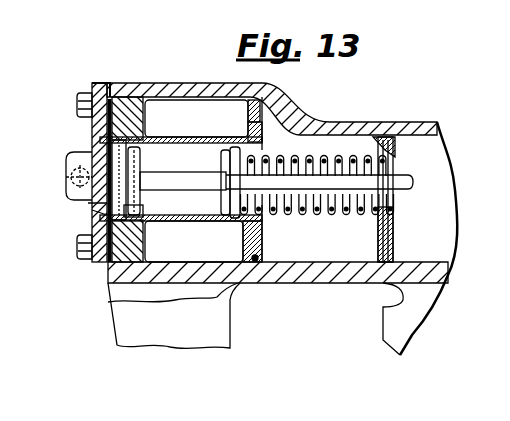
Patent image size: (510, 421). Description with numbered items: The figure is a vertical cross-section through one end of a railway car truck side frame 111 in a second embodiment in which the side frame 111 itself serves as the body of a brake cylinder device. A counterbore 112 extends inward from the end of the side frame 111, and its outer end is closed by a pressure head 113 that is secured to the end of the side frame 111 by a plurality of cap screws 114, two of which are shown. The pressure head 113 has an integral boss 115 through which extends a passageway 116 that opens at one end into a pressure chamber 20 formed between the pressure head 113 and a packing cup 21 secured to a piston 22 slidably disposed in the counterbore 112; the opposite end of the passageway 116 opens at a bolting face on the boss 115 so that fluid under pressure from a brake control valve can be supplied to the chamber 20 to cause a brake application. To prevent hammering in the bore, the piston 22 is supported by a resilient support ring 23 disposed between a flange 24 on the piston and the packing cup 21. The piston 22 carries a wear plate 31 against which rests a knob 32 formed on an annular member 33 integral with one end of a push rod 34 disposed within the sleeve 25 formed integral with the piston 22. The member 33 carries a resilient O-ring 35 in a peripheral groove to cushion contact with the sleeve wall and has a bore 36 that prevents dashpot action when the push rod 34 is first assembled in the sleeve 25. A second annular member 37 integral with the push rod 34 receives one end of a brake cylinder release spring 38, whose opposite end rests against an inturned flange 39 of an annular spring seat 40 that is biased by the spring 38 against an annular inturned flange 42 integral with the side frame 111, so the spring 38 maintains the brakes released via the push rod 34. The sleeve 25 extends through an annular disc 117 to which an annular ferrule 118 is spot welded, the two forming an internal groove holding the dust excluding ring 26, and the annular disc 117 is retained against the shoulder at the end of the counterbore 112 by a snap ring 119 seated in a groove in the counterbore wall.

The pressure chamber 20 is at (100, 258).
The packing cup 21 is at (100, 224).
The piston 22 is at (118, 129).
The resilient support ring 23 is at (138, 251).
The flange 24 is at (136, 233).
The sleeve 25 is at (207, 137).
The dust excluding ring 26 is at (256, 231).
The wear plate 31 is at (88, 204).
The knob 32 is at (150, 173).
The annular member 33 is at (141, 205).
The push rod 34 is at (205, 183).
The resilient O-ring 35 is at (158, 213).
The bore 36 is at (140, 162).
The second annular member 37 is at (228, 206).
The brake cylinder release spring 38 is at (365, 213).
The inturned flange 39 is at (386, 212).
The annular spring seat 40 is at (386, 229).
The annular inturned flange 42 is at (390, 143).
The side frame 111 is at (358, 123).
The counterbore 112 is at (178, 98).
The pressure head 113 is at (100, 83).
The cap screws 114 is at (78, 104).
The boss 115 is at (73, 160).
The passageway 116 is at (74, 182).
The annular disc 117 is at (263, 128).
The annular ferrule 118 is at (251, 120).
The snap ring 119 is at (252, 258).